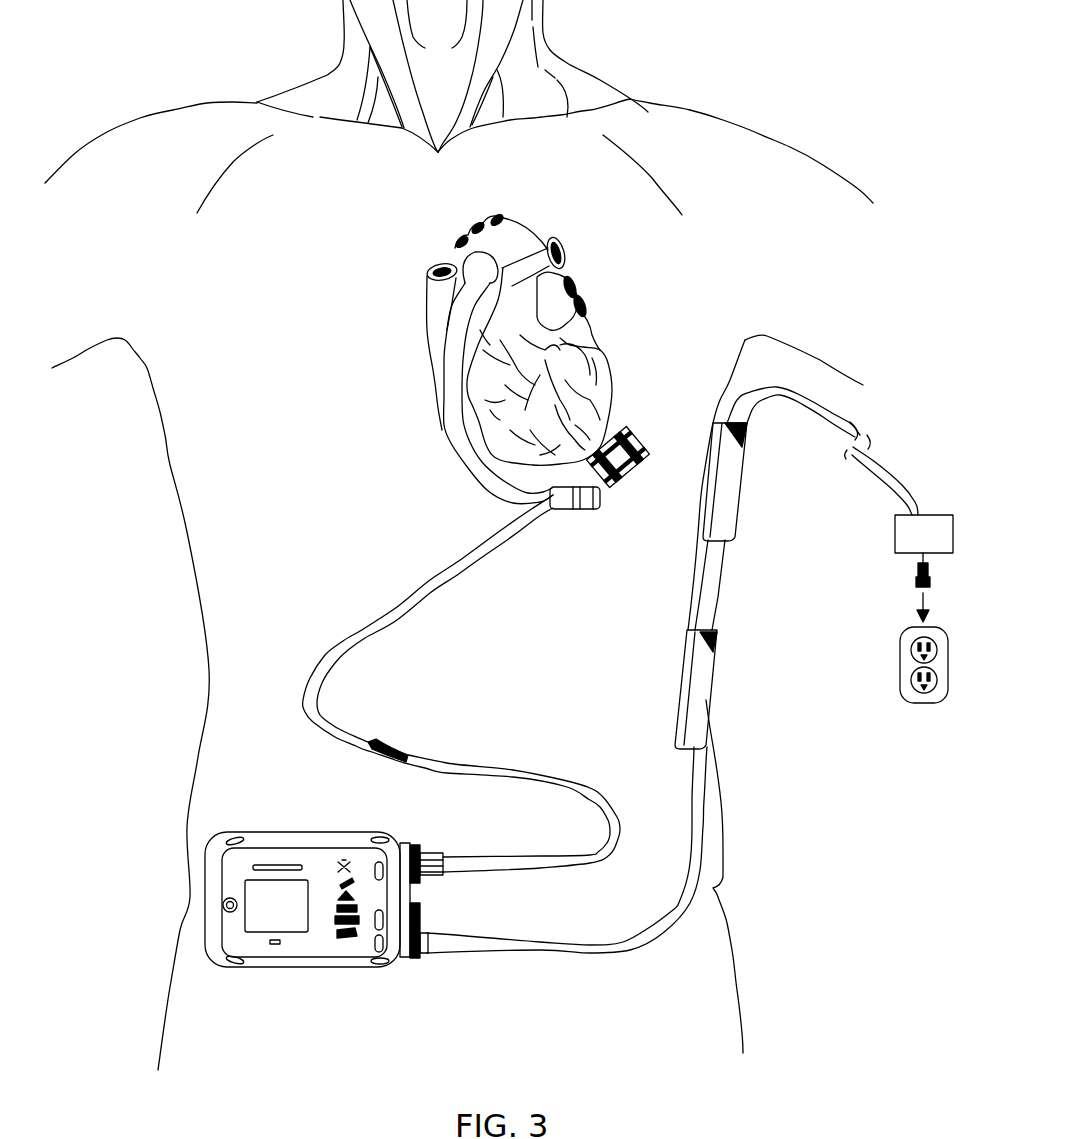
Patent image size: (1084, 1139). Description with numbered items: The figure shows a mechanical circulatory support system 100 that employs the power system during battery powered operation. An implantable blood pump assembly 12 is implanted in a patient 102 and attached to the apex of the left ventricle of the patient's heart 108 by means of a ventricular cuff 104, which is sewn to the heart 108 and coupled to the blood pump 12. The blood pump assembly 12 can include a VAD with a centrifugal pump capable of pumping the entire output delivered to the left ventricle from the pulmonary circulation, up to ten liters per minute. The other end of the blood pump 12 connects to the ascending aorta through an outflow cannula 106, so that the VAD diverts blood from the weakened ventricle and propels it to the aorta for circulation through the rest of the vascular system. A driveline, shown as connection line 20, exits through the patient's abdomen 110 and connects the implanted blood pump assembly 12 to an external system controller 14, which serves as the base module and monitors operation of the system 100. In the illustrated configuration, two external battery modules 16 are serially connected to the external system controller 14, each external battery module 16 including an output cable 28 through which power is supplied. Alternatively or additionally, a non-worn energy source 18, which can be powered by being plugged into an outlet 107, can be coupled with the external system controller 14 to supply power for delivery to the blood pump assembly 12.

The mechanical circulatory support system 100 is at (772, 736).
The patient 102 is at (87, 348).
The ventricular cuff 104 is at (608, 433).
The outflow cannula 106 is at (443, 424).
The heart 108 is at (590, 350).
The blood pump assembly 12 is at (643, 453).
The external system controller 14 is at (215, 865).
The external battery modules 16 is at (737, 497).
The non-worn energy source 18 is at (937, 502).
The connection line 20 is at (457, 575).
The output cable 28 is at (803, 403).
The outlet 107 is at (900, 660).
The abdomen 110 is at (393, 753).